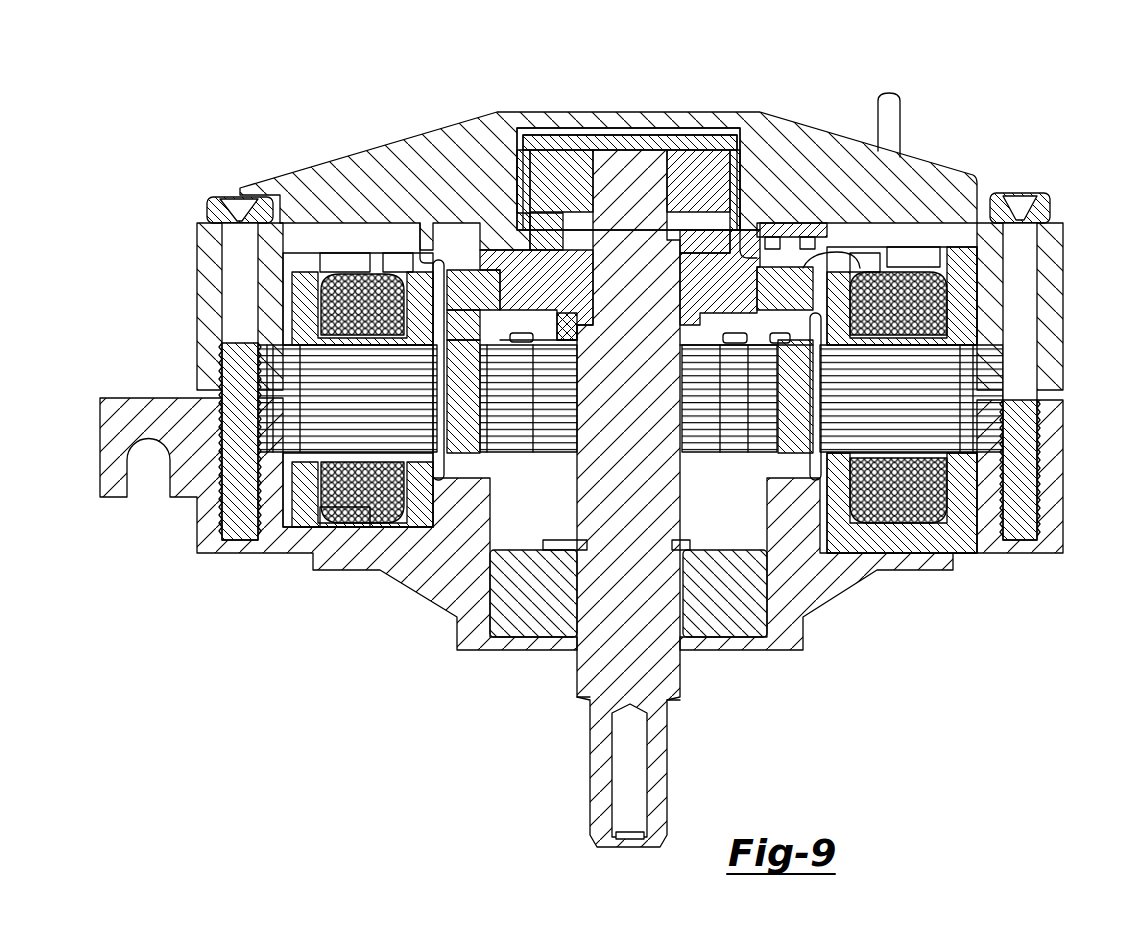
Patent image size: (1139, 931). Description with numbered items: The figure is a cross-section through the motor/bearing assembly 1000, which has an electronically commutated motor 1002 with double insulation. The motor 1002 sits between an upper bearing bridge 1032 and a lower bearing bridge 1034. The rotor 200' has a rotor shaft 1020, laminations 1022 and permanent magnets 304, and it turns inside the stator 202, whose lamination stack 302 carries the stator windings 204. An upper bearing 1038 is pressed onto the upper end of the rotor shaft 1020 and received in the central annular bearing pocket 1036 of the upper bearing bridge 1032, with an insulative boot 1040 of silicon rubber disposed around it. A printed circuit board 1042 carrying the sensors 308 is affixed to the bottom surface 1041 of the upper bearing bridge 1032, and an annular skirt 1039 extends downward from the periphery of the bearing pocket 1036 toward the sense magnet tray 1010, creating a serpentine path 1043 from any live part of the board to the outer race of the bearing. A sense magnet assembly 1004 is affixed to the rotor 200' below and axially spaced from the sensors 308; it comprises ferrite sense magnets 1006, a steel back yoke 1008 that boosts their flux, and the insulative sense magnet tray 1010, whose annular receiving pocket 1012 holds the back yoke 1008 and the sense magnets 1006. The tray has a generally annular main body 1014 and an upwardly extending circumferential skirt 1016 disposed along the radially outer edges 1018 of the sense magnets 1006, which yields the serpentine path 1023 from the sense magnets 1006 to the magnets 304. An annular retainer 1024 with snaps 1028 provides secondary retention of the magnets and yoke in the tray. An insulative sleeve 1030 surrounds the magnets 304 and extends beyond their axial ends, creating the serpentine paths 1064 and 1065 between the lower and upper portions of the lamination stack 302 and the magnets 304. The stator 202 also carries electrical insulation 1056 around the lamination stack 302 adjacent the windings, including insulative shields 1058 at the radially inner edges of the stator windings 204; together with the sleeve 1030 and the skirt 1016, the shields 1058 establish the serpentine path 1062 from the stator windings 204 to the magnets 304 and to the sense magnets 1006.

The motor/bearing assembly 1000 is at (236, 126).
The electronically commutated motor 1002 is at (895, 238).
The sense magnet assembly 1004 is at (528, 232).
The sense magnets 1006 is at (472, 280).
The back yoke 1008 is at (556, 339).
The sense magnet tray 1010 is at (541, 281).
The annular receiving pocket 1012 is at (835, 288).
The main body 1014 is at (737, 292).
The circumferential skirt 1016 is at (470, 300).
The radially outer edges 1018 is at (945, 300).
The rotor shaft 1020 is at (580, 695).
The laminations 1022 is at (567, 430).
The serpentine path 1023 is at (420, 258).
The annular retainer 1024 is at (708, 243).
The snaps 1028 is at (565, 332).
The insulative sleeve 1030 is at (436, 482).
The upper bearing bridge 1032 is at (613, 128).
The lower bearing bridge 1034 is at (243, 553).
The bearing pocket 1036 is at (541, 145).
The upper bearing 1038 is at (677, 158).
The annular skirt 1039 is at (747, 246).
The insulative boot 1040 is at (708, 142).
The bottom surface 1041 is at (900, 238).
The printed circuit board 1042 is at (813, 224).
The serpentine path 1043 is at (699, 219).
The electrical insulation 1056 is at (973, 528).
The insulative shields 1058 is at (837, 528).
The serpentine path 1062 is at (860, 262).
The serpentine path 1064 is at (815, 486).
The serpentine path 1065 is at (804, 333).
The rotor 200' is at (683, 406).
The stator 202 is at (988, 304).
The stator windings 204 is at (940, 278).
The lamination stack 302 is at (995, 418).
The magnets 304 is at (465, 448).
The sensors 308 is at (785, 243).